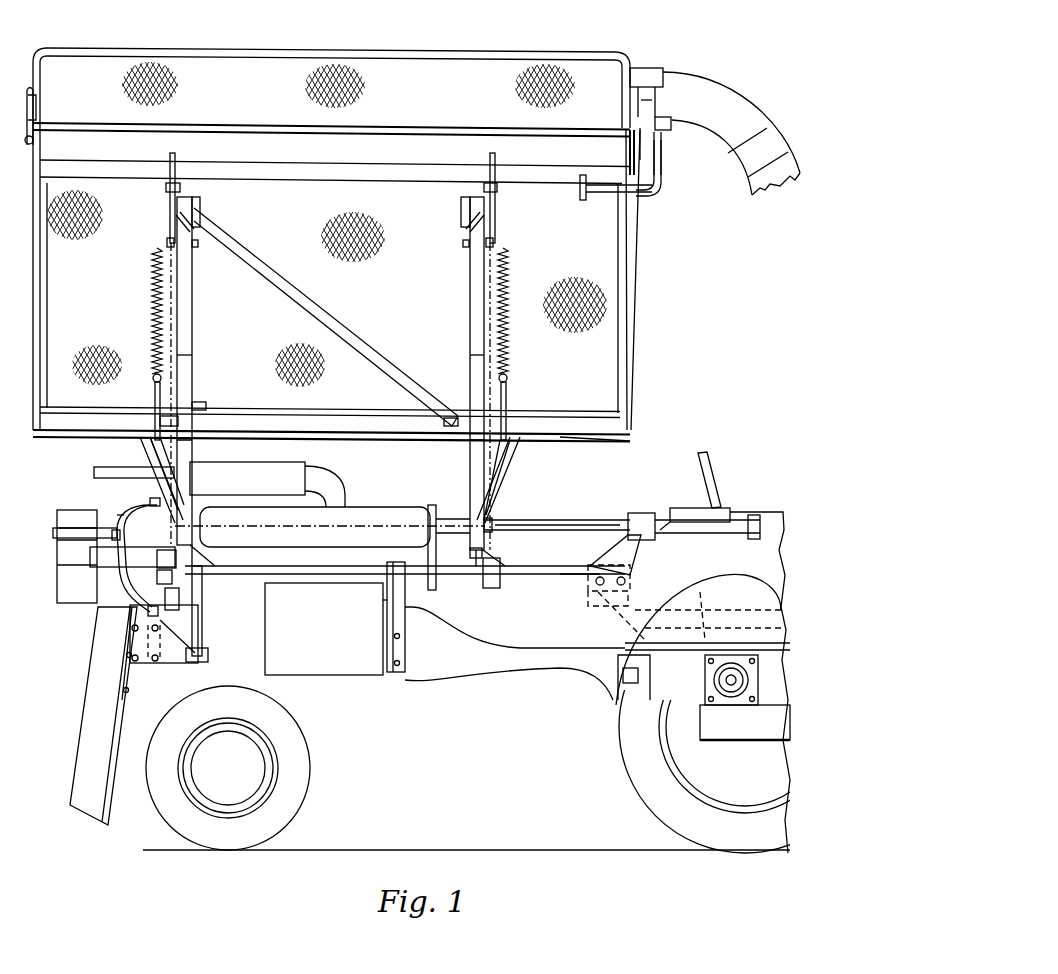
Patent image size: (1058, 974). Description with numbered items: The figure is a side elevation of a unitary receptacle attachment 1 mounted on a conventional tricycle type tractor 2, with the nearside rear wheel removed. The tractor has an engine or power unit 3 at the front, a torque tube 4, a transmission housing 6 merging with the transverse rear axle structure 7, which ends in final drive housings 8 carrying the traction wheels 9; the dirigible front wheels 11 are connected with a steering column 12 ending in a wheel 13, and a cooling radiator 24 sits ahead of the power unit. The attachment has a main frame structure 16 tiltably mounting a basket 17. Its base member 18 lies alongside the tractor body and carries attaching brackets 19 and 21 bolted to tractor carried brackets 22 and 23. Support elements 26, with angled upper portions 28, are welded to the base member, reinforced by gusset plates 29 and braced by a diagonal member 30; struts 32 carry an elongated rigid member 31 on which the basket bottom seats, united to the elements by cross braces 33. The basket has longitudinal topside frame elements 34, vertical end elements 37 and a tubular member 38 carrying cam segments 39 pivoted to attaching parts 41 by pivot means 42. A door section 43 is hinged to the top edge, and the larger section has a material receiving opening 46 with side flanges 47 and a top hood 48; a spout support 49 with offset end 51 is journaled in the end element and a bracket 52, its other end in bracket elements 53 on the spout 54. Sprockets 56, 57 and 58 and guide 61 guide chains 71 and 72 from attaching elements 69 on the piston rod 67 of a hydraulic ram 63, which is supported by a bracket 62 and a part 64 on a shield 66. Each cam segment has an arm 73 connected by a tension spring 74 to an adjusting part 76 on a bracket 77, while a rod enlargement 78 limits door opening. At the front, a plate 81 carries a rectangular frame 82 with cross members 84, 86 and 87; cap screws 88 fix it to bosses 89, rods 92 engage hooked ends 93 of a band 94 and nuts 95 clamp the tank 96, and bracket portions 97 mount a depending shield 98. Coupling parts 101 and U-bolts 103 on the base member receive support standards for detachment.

The unitary receptacle attachment 1 is at (367, 276).
The tractor 2 is at (410, 542).
The engine or power unit 3 is at (304, 630).
The torque tube 4 is at (503, 665).
The transmission housing 6 is at (643, 700).
The transverse rear axle structure 7 is at (731, 700).
The final drive housing 8 is at (766, 740).
The traction wheel 9 is at (630, 795).
The dirigible front wheel 11 is at (298, 732).
The steering column 12 is at (700, 510).
The steering wheel 13 is at (708, 460).
The main frame structure 16 is at (545, 580).
The basket 17 is at (585, 408).
The base section or member 18 is at (324, 552).
The attaching bracket 19 is at (386, 600).
The attaching bracket 21 is at (598, 584).
The tractor carried bracket 22 is at (406, 660).
The tractor carried bracket 23 is at (612, 600).
The cooling radiator 24 is at (203, 578).
The support member or element 26 is at (222, 331).
The upper portion 28 is at (192, 283).
The gusset plate 29 is at (207, 556).
The diagonal member 30 is at (360, 332).
The elongated rigid member 31 is at (366, 426).
The rigid strut 32 is at (145, 450).
The cross brace 33 is at (208, 410).
The longitudinal topside frame element 34 is at (327, 133).
The vertical nearside end element 37 is at (42, 352).
The longitudinal tubular member 38 is at (332, 178).
The cam segment 39 is at (176, 162).
The attaching part 41 is at (200, 200).
The pivot means 42 is at (165, 188).
The door section 43 is at (222, 68).
The material receiving opening 46 is at (645, 101).
The vertical side flange 47 is at (660, 112).
The top hood or flange 48 is at (655, 68).
The conveyer or spout support 49 is at (663, 155).
The offset end portion 51 is at (602, 194).
The bracket 52 is at (583, 200).
The bracket element 53 is at (667, 130).
The spout 54 is at (740, 92).
The sprocket 56 is at (195, 248).
The sprocket 57 is at (180, 416).
The sprocket 58 is at (180, 505).
The guide 61 is at (492, 533).
The bracket 62 is at (640, 560).
The hydraulic ram 63 is at (706, 533).
The part 64 is at (754, 515).
The shield 66 is at (770, 560).
The piston rod portion 67 is at (556, 519).
The chain attaching element 69 is at (450, 512).
The chain 71 is at (469, 357).
The chain 72 is at (193, 357).
The projecting arm 73 is at (170, 218).
The tension spring 74 is at (150, 322).
The spring tension adjusting part 76 is at (38, 102).
The bracket 77 is at (190, 446).
The enlargement 78 is at (35, 150).
The plate 81 is at (152, 528).
The rectangular frame 82 is at (180, 606).
The transverse cross member 84 is at (135, 612).
The top cross member 86 is at (150, 502).
The bottom cross member or front support 87 is at (192, 645).
The cap screw 88 is at (180, 658).
The internally threaded boss 89 is at (204, 652).
The tank supporting rod 92 is at (118, 578).
The hooked end 93 is at (121, 537).
The tank engaging band 94 is at (55, 533).
The nut 95 is at (148, 606).
The tank 96 is at (82, 512).
The bracket portion 97 is at (128, 642).
The depending shield 98 is at (90, 672).
The coupling part 101 is at (157, 556).
The U-bolt 103 is at (178, 576).